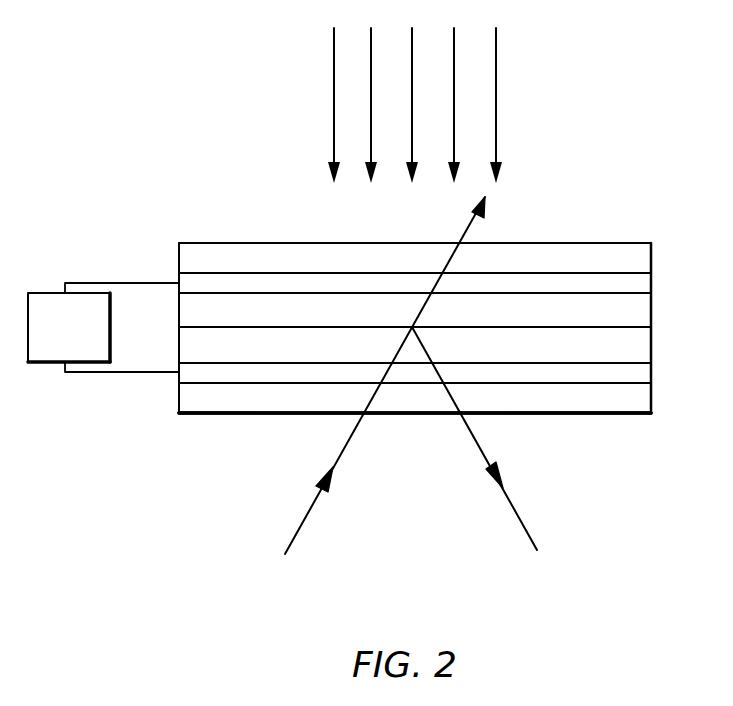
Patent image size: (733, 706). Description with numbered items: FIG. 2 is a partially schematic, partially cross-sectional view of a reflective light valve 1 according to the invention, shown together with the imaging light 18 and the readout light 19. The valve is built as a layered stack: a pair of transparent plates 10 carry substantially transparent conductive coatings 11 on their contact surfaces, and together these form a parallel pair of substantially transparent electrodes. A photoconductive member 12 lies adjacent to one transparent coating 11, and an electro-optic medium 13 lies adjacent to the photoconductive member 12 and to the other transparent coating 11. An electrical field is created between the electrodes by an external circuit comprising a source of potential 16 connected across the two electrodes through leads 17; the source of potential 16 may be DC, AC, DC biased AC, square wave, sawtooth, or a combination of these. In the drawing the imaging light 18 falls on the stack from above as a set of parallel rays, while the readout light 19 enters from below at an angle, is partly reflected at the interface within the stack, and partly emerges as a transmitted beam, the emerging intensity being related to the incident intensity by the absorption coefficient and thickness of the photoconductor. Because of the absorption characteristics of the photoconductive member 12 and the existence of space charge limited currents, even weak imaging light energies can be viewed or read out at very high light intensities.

The light valve 1 is at (265, 430).
The transparent plates 10 is at (183, 262).
The transparent conductive coatings 11 is at (646, 284).
The photoconductive member 12 is at (642, 318).
The electro-optic medium 13 is at (645, 352).
The source of potential 16 is at (32, 365).
The leads 17 is at (83, 281).
The imaging light 18 is at (496, 88).
The readout light 19 is at (467, 232).